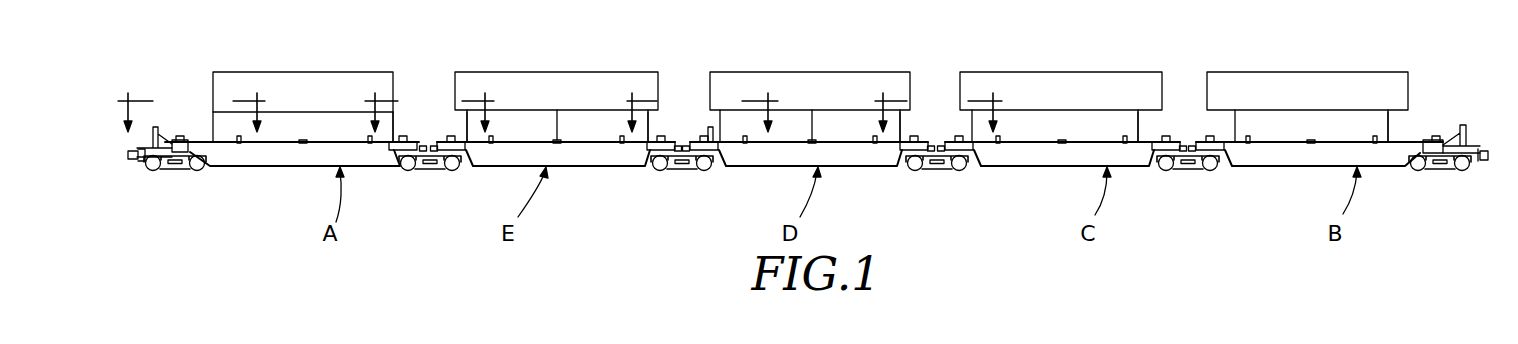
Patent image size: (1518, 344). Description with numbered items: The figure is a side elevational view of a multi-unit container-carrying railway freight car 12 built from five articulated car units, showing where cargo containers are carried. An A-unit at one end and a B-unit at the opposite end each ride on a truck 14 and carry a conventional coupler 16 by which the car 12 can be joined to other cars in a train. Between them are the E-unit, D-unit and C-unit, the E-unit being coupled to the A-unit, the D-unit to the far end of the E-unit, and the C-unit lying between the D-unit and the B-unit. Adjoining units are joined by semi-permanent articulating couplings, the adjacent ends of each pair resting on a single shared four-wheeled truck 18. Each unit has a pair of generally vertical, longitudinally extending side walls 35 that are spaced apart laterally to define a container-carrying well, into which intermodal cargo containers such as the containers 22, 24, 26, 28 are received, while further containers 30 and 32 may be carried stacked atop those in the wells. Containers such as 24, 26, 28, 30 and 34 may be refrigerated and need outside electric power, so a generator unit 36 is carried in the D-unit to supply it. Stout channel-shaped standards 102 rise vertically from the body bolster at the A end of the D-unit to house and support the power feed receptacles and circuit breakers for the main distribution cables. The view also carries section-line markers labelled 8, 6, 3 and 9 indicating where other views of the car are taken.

The multi-unit railway freight car 12 is at (1124, 187).
The truck 14 is at (178, 172).
The coupler 16 is at (131, 166).
The four-wheeled truck 18 is at (432, 172).
The cargo container 22 is at (395, 125).
The cargo container 24 is at (902, 127).
The cargo container 26 is at (650, 120).
The cargo container 28 is at (463, 122).
The cargo container 30 is at (297, 71).
The cargo container 32 is at (770, 71).
The cargo container 34 is at (583, 71).
The side wall 35 is at (263, 153).
The generator unit 36 is at (791, 134).
The channel-shaped standard 102 is at (708, 130).
The section line for FIG. 8 is at (195, 100).
The section line for FIG. 6 is at (430, 102).
The section line for FIG. 3 is at (702, 102).
The section line for FIG. 9 is at (936, 102).